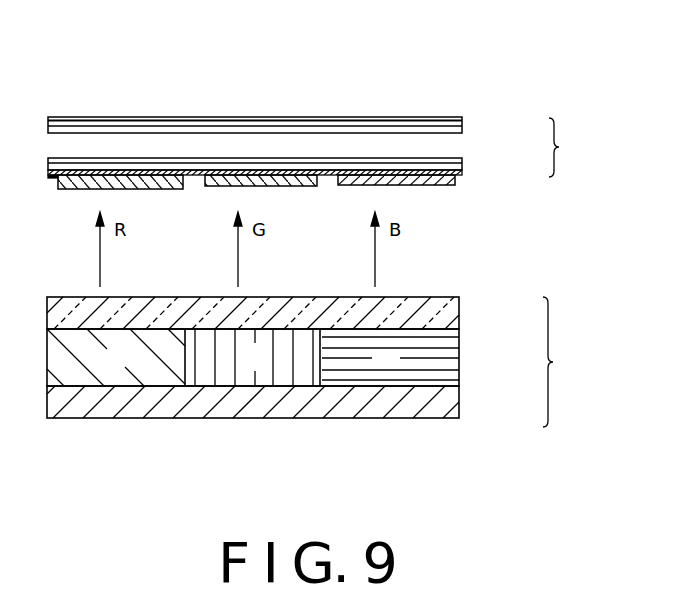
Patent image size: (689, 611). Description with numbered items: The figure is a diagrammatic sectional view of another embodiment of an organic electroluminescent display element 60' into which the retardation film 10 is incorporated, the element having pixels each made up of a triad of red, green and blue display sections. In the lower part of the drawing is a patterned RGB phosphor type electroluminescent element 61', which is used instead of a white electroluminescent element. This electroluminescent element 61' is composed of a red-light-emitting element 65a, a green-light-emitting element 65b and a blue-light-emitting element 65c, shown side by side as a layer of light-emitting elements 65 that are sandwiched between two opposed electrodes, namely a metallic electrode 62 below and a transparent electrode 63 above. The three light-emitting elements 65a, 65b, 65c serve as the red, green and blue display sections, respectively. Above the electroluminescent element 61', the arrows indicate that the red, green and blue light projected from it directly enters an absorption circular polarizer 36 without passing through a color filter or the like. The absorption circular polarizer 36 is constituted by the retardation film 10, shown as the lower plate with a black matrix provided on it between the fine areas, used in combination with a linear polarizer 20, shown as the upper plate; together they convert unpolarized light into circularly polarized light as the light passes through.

The organic electroluminescent display element 60' is at (525, 78).
The linear polarizer 20 is at (462, 126).
The retardation film 10 is at (455, 166).
The absorption circular polarizer 36 is at (573, 147).
The transparent electrode 63 is at (452, 318).
The light-emitting elements 65 is at (288, 401).
The metallic electrode 62 is at (448, 402).
The patterned RGB phosphor type electroluminescent element 61' is at (571, 362).
The red-light-emitting element 65a is at (88, 382).
The green-light-emitting element 65b is at (228, 378).
The blue-light-emitting element 65c is at (350, 376).